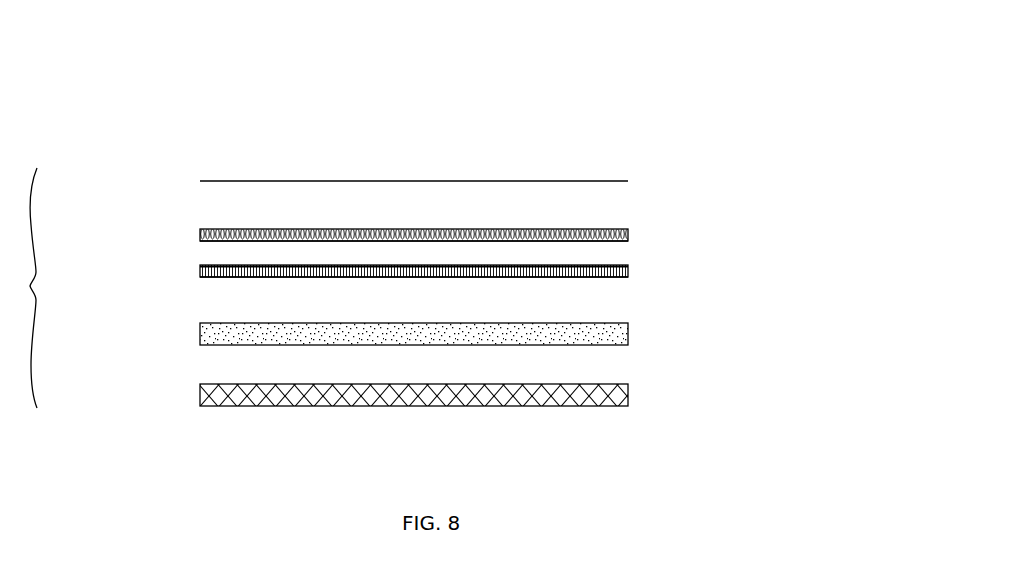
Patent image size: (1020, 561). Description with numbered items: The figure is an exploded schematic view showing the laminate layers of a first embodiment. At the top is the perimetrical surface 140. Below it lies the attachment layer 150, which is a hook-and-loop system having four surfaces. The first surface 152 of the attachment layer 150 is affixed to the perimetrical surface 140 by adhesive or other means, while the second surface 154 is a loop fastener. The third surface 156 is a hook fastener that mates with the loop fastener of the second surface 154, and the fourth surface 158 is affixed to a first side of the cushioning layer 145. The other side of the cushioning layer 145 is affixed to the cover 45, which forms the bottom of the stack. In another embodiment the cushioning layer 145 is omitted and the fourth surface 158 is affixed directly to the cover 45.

The perimetrical surface 140 is at (597, 181).
The attachment layer 150 is at (445, 251).
The first surface 152 is at (232, 232).
The second surface 154 is at (222, 245).
The third surface 156 is at (210, 266).
The fourth surface 158 is at (237, 275).
The cushioning layer 145 is at (595, 335).
The cover 45 is at (585, 404).